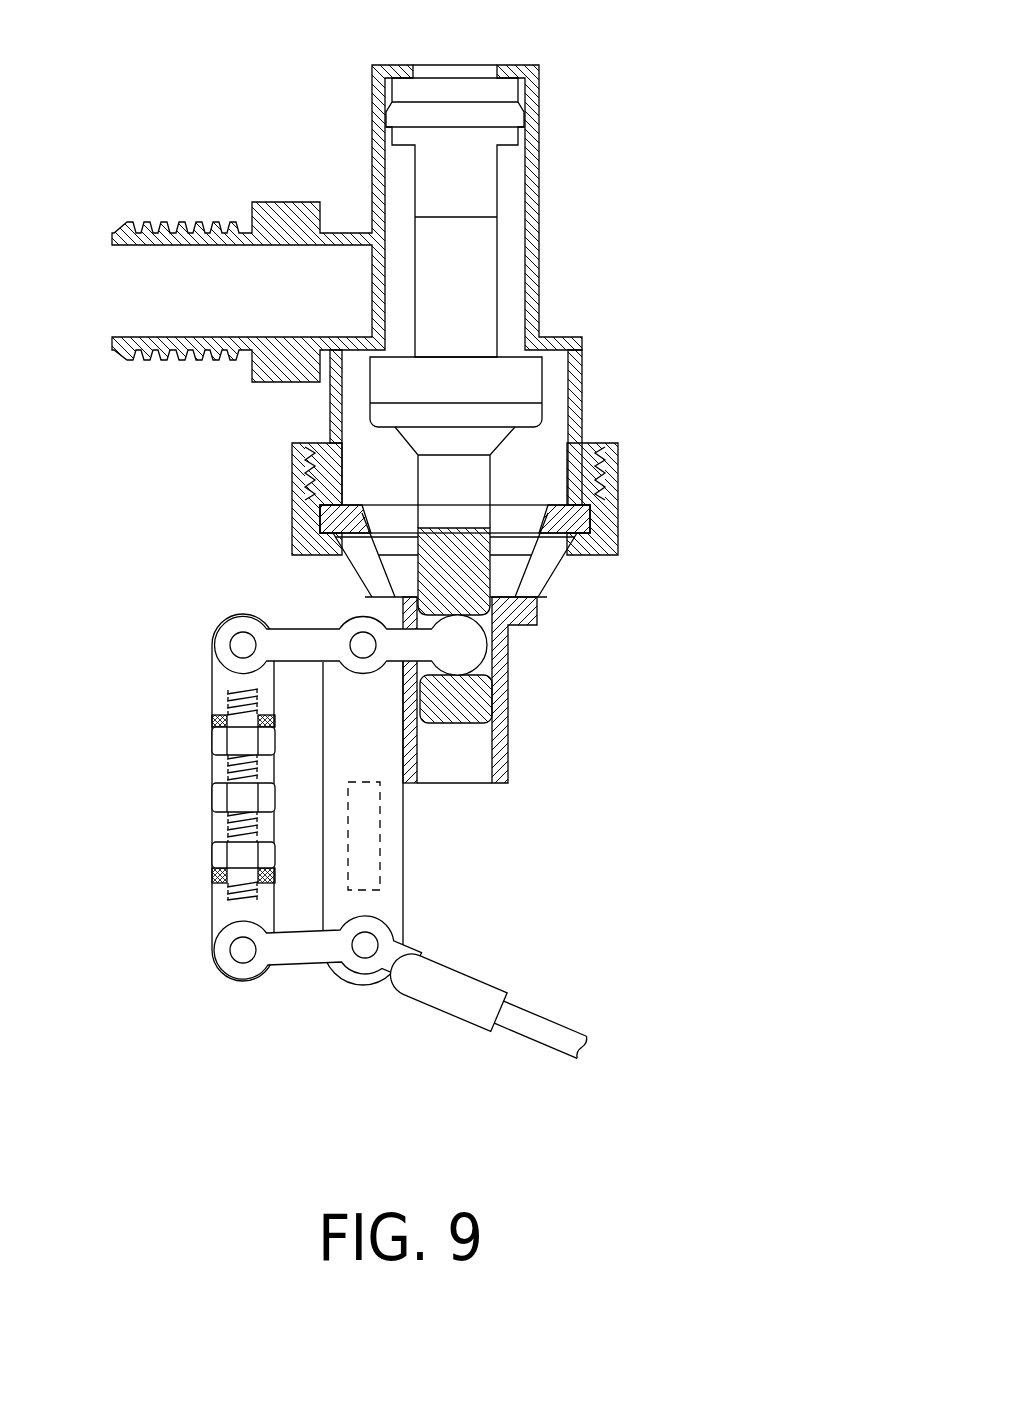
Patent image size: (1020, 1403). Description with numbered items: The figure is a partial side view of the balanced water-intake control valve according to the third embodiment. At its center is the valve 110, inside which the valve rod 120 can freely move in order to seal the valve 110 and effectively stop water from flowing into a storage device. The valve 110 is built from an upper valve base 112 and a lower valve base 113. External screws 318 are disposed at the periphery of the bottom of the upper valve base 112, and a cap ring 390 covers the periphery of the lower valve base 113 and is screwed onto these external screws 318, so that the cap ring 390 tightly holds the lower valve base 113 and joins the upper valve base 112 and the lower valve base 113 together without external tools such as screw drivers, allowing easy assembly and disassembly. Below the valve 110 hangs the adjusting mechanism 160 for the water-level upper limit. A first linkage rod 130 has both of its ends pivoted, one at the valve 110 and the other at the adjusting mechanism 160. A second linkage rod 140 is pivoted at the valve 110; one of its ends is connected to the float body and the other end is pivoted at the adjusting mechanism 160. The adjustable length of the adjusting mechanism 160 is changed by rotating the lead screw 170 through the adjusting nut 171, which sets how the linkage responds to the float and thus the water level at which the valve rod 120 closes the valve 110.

The valve 110 is at (832, 421).
The upper valve base 112 is at (582, 390).
The lower valve base 113 is at (557, 582).
The valve rod 120 is at (498, 288).
The first linkage rod 130 is at (290, 630).
The second linkage rod 140 is at (280, 965).
The adjusting mechanism 160 is at (200, 745).
The lead screw 170 is at (218, 820).
The adjusting nut 171 is at (210, 798).
The external screws 318 is at (292, 457).
The cap ring 390 is at (292, 500).